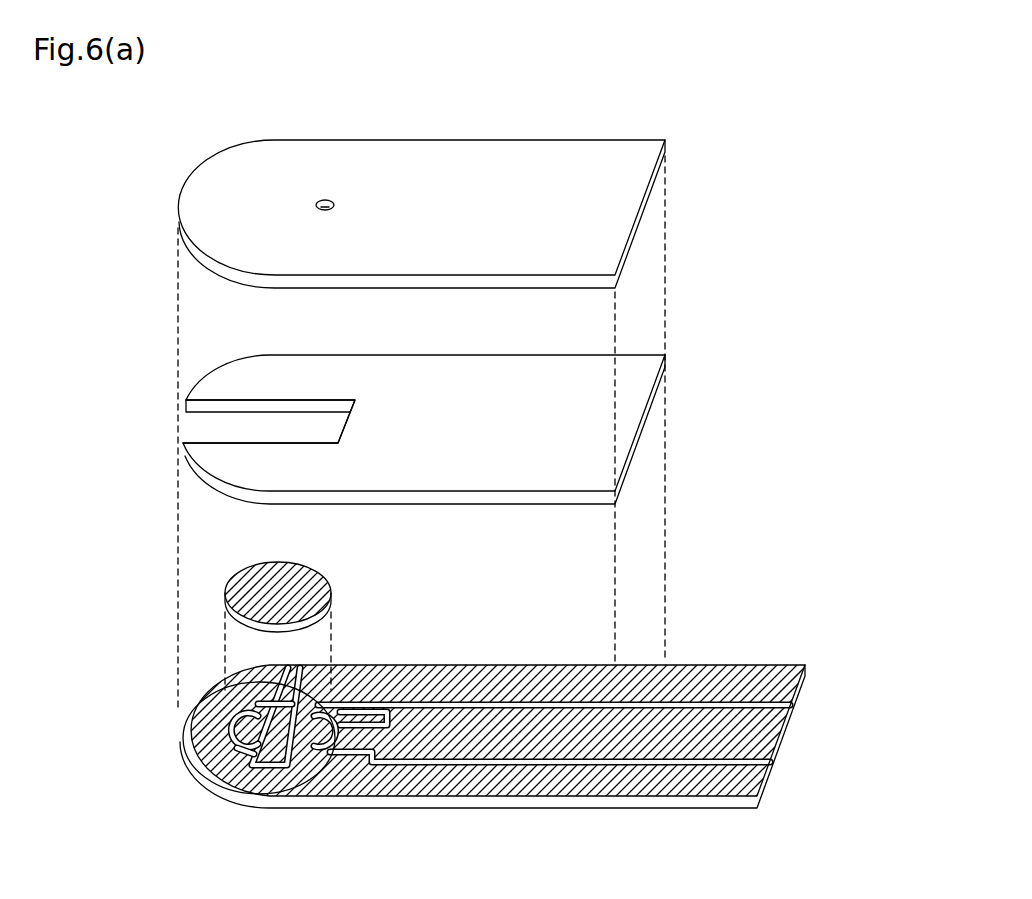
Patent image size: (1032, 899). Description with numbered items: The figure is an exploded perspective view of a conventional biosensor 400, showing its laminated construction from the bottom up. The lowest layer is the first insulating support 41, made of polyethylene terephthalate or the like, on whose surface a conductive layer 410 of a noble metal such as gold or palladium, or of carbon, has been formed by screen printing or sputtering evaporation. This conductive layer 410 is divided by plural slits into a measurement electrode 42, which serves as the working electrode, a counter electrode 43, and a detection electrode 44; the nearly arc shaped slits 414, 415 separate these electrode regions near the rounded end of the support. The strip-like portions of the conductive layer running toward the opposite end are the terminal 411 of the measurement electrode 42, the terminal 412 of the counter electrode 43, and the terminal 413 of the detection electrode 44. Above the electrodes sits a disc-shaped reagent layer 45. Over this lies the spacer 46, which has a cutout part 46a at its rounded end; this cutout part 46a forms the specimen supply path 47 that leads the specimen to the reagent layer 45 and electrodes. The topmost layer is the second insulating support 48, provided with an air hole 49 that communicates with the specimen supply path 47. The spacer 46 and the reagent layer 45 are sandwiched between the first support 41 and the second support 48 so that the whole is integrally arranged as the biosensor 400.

The biosensor 400 is at (816, 284).
The first insulating support 41 is at (492, 739).
The conductive layer 410 is at (735, 690).
The terminal of the measurement electrode 411 is at (778, 683).
The terminal of the counter electrode 412 is at (760, 785).
The terminal of the detection electrode 413 is at (770, 735).
The arc shaped slit 414 is at (185, 760).
The arc shaped slit 415 is at (320, 804).
The measurement electrode 42 is at (263, 797).
The counter electrode 43 is at (214, 690).
The detection electrode 44 is at (365, 725).
The reagent layer 45 is at (307, 578).
The spacer 46 is at (411, 407).
The cutout part 46a is at (331, 399).
The specimen supply path 47 is at (218, 432).
The second insulating support 48 is at (458, 188).
The air hole 49 is at (326, 199).